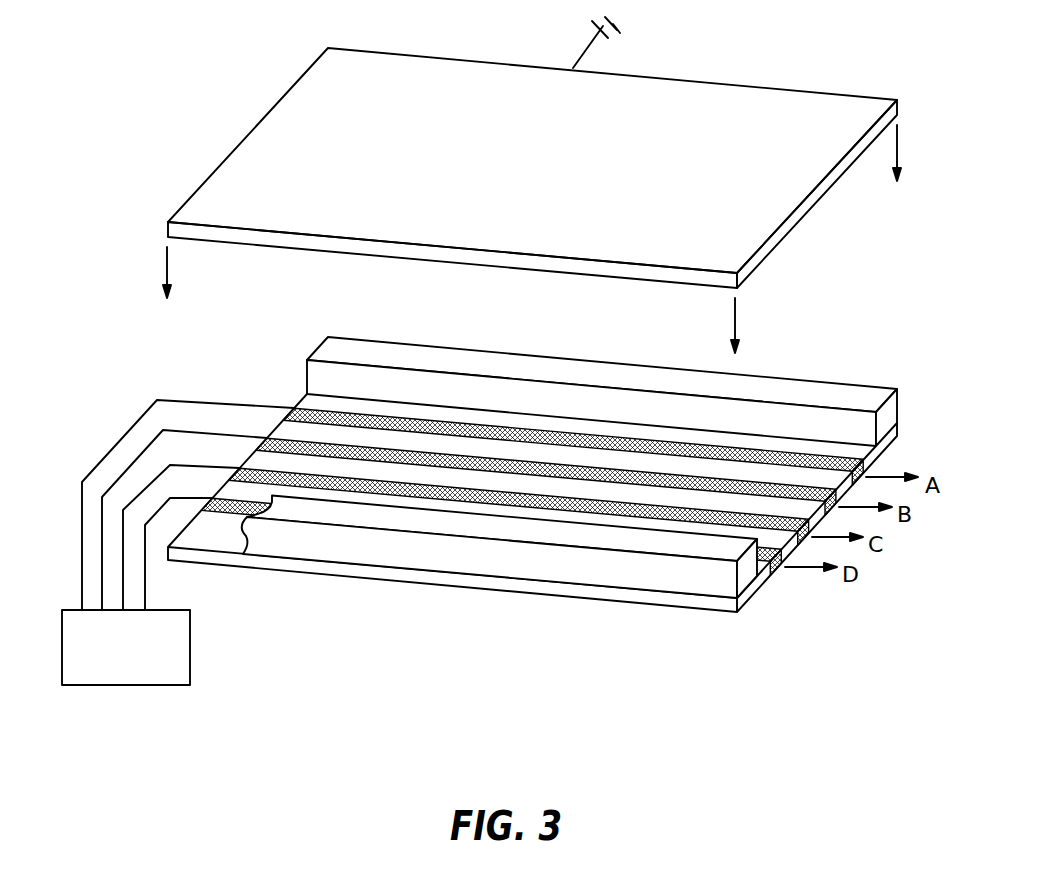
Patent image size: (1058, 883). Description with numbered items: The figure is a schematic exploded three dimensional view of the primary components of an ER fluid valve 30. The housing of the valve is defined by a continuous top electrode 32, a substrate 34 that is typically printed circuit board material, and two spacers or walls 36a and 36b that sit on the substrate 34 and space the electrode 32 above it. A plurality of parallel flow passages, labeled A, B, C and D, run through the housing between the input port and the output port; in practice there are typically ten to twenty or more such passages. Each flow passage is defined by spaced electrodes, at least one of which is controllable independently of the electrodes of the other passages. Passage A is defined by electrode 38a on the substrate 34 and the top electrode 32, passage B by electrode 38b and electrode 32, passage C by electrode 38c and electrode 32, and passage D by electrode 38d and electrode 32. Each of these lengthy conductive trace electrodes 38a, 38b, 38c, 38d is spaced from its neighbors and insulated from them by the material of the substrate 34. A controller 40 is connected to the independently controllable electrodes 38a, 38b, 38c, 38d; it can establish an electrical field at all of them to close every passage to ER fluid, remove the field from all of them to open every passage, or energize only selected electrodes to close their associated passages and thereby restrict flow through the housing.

The ER fluid valve 30 is at (842, 268).
The electrode 32 is at (829, 108).
The substrate 34 is at (560, 590).
The spacer 36a is at (657, 573).
The spacer 36b is at (793, 393).
The electrode 38a is at (485, 430).
The electrode 38b is at (397, 455).
The electrode 38c is at (310, 475).
The electrode 38d is at (210, 500).
The controller 40 is at (137, 675).